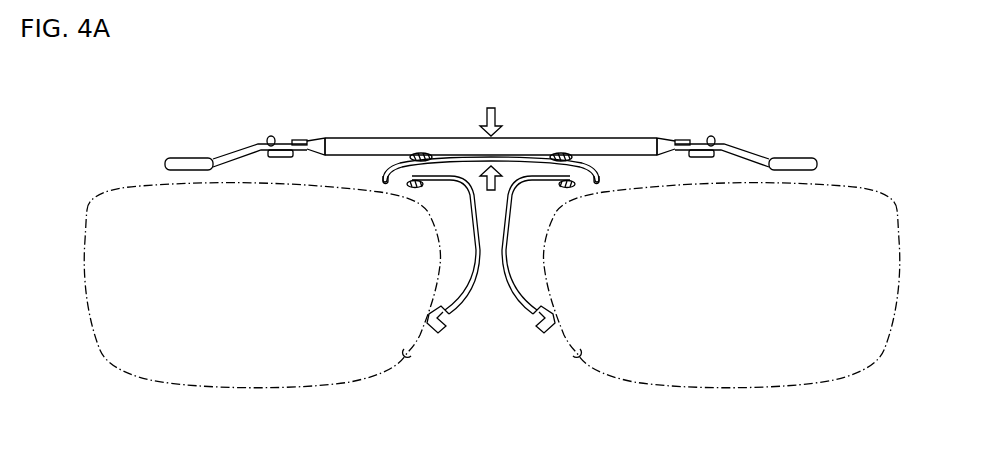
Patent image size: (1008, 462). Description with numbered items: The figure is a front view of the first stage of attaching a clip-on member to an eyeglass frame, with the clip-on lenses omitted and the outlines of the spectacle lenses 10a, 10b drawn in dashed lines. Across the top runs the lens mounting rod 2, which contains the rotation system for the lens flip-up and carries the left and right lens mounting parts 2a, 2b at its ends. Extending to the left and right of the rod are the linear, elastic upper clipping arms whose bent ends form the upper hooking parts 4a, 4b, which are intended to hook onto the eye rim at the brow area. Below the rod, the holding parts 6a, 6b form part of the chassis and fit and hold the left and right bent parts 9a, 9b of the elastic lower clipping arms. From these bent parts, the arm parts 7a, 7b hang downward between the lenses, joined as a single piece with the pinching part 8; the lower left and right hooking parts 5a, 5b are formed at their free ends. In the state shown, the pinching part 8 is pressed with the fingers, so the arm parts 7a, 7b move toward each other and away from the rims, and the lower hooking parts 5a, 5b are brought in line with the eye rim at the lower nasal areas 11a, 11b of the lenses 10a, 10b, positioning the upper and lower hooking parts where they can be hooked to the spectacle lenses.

The lens mounting rod 2 is at (467, 142).
The lens mounting part 2a is at (229, 158).
The lens mounting part 2b is at (753, 158).
The upper hooking part 4a is at (270, 136).
The upper hooking part 4b is at (717, 136).
The lower left hooking part 5a is at (443, 337).
The lower right hooking part 5b is at (545, 337).
The holding part 6a is at (400, 157).
The holding part 6b is at (583, 157).
The arm part 7a is at (463, 310).
The arm part 7b is at (524, 310).
The pinching part 8 is at (508, 156).
The left bent part 9a is at (383, 176).
The right bent part 9b is at (601, 176).
The lens of the spectacle frame 10a is at (262, 377).
The lens of the spectacle frame 10b is at (710, 377).
The nasal area 11a is at (405, 352).
The nasal area 11b is at (580, 352).